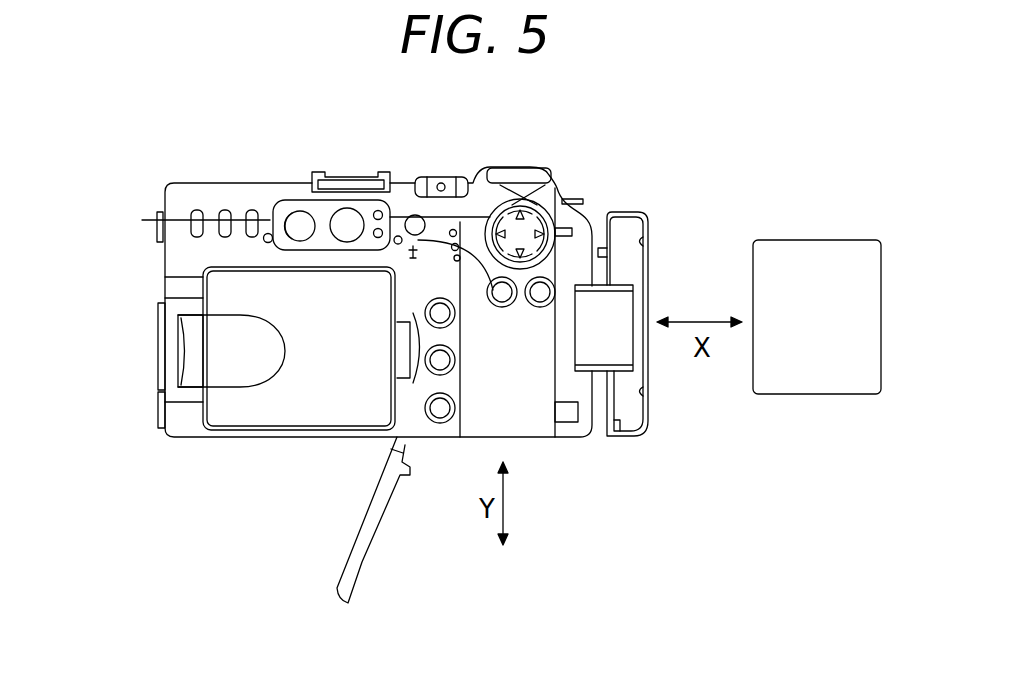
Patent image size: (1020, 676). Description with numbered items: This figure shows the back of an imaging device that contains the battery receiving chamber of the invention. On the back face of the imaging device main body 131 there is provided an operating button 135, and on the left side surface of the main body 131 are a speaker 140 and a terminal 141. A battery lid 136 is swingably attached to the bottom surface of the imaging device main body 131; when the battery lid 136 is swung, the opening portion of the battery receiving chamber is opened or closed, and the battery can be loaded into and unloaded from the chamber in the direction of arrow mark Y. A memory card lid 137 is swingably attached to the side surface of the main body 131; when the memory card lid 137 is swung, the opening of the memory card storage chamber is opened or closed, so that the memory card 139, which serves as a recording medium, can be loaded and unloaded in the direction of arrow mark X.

The imaging device main body 131 is at (280, 196).
The operating button 135 is at (548, 200).
The battery lid 136 is at (346, 580).
The memory card lid 137 is at (628, 404).
The memory card 139 is at (843, 365).
The speaker 140 is at (158, 323).
The terminal 141 is at (158, 392).